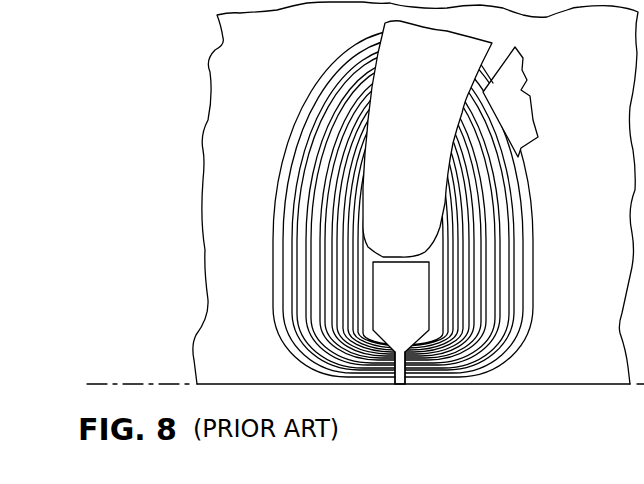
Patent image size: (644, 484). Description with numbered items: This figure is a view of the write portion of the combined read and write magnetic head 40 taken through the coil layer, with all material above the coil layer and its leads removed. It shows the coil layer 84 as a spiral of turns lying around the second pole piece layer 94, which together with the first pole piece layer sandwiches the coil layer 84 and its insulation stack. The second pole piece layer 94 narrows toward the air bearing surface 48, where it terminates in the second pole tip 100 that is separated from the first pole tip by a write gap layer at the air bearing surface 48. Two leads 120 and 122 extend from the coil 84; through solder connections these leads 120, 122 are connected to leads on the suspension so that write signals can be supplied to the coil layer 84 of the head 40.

The magnetic head 40 is at (552, 186).
The coil layer 84 is at (505, 282).
The lead 122 is at (526, 93).
The lead 120 is at (431, 135).
The second pole piece layer 94 is at (388, 309).
The second pole tip 100 is at (400, 386).
The air bearing surface 48 is at (142, 385).